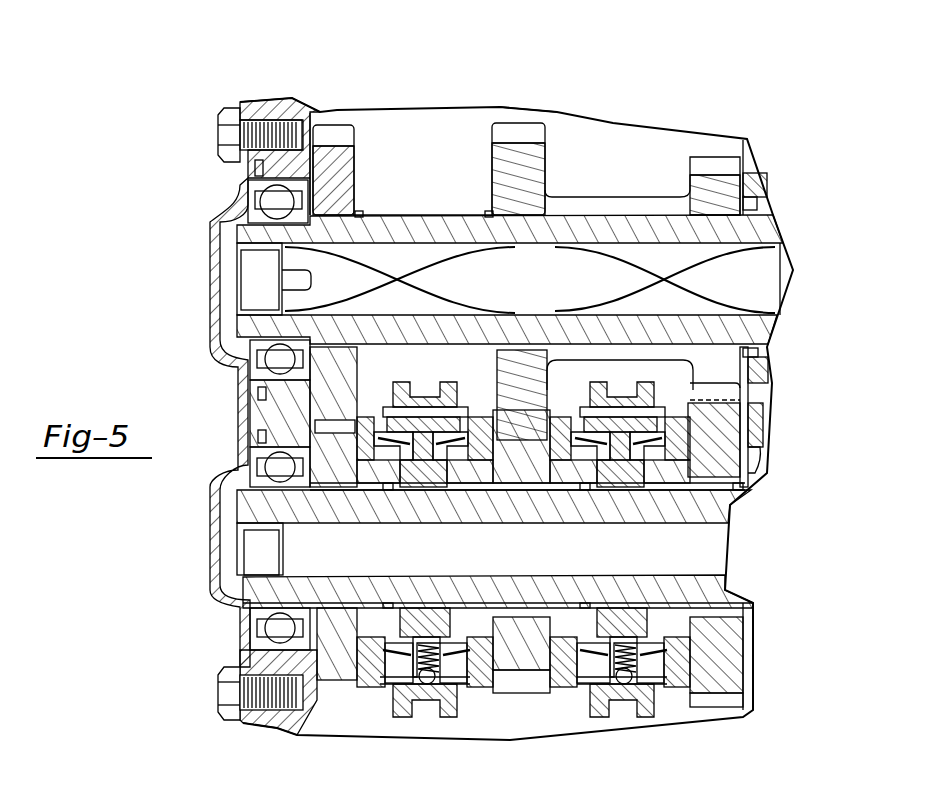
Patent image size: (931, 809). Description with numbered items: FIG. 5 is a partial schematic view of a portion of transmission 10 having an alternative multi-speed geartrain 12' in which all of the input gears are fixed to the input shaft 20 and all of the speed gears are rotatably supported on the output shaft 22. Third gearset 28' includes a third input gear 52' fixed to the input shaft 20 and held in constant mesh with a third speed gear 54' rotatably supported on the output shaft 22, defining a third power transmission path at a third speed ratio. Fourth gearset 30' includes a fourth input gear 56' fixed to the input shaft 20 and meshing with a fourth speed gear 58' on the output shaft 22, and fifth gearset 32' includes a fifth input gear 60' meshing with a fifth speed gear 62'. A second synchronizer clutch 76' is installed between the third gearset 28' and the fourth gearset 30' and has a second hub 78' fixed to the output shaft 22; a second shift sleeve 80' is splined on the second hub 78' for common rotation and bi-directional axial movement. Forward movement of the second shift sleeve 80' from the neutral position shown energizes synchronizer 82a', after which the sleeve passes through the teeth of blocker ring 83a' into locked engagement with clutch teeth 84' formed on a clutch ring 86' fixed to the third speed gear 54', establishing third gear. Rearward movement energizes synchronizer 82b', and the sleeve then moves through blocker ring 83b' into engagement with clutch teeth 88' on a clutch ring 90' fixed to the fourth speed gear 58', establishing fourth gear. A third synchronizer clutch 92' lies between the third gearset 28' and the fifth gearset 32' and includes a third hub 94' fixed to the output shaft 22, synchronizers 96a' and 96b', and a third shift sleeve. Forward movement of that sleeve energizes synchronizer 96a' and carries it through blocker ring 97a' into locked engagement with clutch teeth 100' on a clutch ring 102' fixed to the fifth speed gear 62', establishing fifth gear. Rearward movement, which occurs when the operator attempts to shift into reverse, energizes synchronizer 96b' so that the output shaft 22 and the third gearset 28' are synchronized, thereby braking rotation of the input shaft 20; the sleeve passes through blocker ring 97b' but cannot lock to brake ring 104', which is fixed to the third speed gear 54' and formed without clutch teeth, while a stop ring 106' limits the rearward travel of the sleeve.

The transmission 10 is at (667, 108).
The multi-speed geartrain 12' is at (424, 120).
The input shaft 20 is at (760, 233).
The output shaft 22 is at (730, 505).
The third gearset 28' is at (547, 79).
The fourth gearset 30' is at (286, 350).
The fifth gearset 32' is at (586, 418).
The third input gear 52' is at (546, 169).
The third speed gear 54' is at (521, 697).
The fourth input gear 56' is at (360, 169).
The fourth speed gear 58' is at (287, 697).
The fifth input gear 60' is at (681, 168).
The fifth speed gear 62' is at (756, 723).
The second synchronizer clutch 76' is at (422, 689).
The second hub 78' is at (416, 499).
The second shift sleeve 80' is at (414, 384).
The synchronizer 82a' is at (459, 715).
The synchronizer 82b' is at (365, 717).
The blocker ring 83a' is at (464, 492).
The blocker ring 83b' is at (367, 488).
The clutch teeth 84' is at (433, 388).
The clutch ring 86' is at (494, 495).
The clutch teeth 88' is at (223, 333).
The clutch ring 90' is at (224, 586).
The third synchronizer clutch 92' is at (639, 696).
The third hub 94' is at (624, 483).
The synchronizer 96a' is at (698, 712).
The synchronizer 96b' is at (616, 715).
The blocker ring 97a' is at (714, 492).
The blocker ring 97b' is at (602, 469).
The clutch teeth 100' is at (773, 656).
The clutch ring 102' is at (544, 598).
The brake ring 104' is at (618, 347).
The stop ring 106' is at (568, 710).